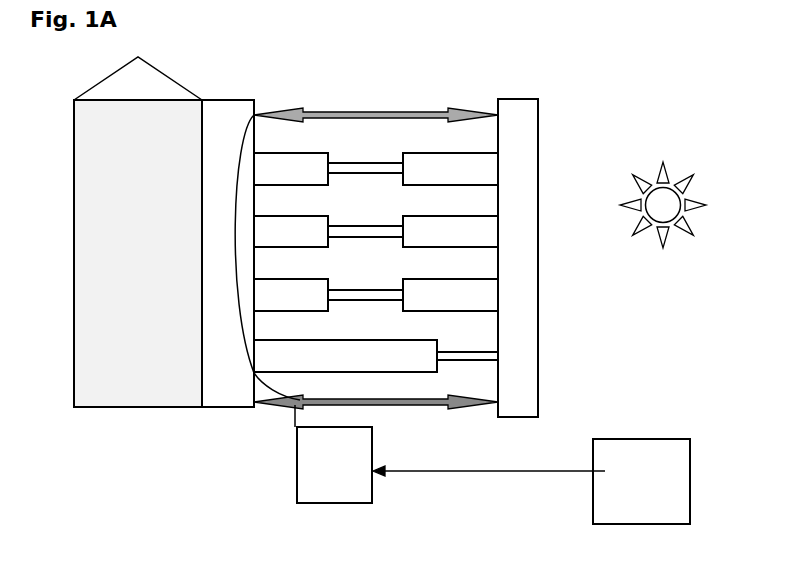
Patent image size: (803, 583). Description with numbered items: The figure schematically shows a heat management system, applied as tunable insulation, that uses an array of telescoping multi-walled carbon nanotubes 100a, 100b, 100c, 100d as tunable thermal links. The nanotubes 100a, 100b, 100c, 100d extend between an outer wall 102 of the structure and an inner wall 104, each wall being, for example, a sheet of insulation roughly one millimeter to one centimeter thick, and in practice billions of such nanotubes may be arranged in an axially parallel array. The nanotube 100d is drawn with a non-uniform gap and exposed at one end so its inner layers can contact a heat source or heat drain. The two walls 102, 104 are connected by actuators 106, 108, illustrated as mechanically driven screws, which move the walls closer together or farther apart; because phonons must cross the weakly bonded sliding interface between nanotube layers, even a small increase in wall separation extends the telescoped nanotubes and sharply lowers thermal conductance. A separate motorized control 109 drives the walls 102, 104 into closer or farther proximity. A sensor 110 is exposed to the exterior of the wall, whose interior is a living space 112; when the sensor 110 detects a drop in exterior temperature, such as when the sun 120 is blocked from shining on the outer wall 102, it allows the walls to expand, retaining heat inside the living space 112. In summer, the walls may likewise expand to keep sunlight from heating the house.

The telescoping nanotube 100a is at (478, 165).
The telescoping nanotube 100b is at (488, 230).
The telescoping nanotube 100c is at (488, 295).
The telescoping nanotube 100d is at (490, 357).
The outer wall 102 is at (530, 393).
The inner wall 104 is at (232, 110).
The actuator 106 is at (277, 405).
The actuator 108 is at (392, 110).
The motorized control 109 is at (297, 480).
The sensor 110 is at (635, 491).
The living space 112 is at (138, 232).
The sun 120 is at (682, 178).